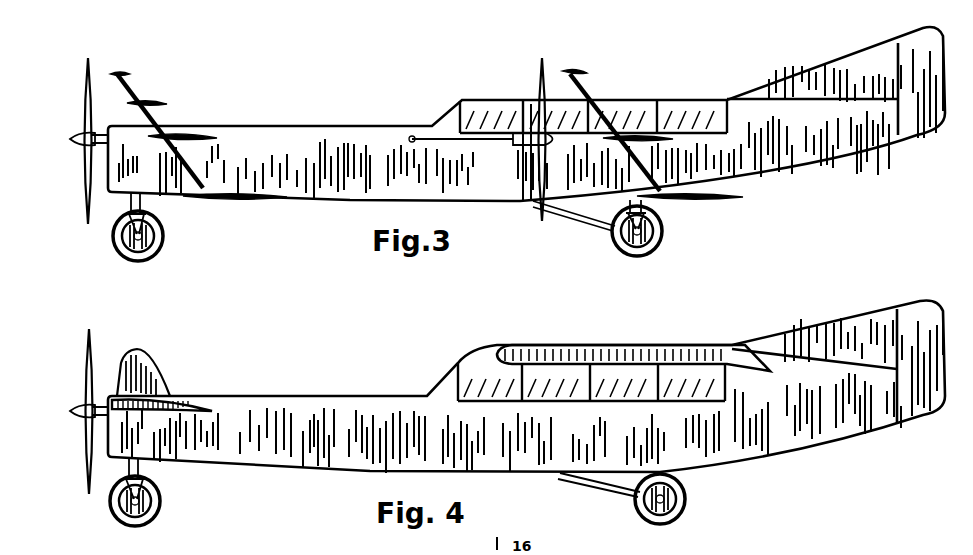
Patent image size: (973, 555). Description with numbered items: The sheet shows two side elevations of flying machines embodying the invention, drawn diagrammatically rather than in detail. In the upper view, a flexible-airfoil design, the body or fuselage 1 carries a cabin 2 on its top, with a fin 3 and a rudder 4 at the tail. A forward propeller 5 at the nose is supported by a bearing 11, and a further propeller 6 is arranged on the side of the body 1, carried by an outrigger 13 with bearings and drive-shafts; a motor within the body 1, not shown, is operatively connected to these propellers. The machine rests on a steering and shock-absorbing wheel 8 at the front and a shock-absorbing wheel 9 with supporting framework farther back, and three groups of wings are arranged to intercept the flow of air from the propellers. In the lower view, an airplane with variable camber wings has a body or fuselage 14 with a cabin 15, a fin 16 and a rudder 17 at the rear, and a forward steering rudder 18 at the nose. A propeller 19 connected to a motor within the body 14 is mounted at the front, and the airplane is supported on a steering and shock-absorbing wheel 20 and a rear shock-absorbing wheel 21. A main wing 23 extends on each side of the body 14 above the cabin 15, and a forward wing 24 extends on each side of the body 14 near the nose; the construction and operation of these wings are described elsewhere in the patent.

In FIG. 3, the body or fuselage 1 is at (342, 125).
In FIG. 3, the cabin 2 is at (478, 98).
In FIG. 3, the fin 3 is at (835, 67).
In FIG. 3, the rudder 4 is at (920, 122).
In FIG. 3, the forward propeller 5 is at (84, 103).
In FIG. 3, the propeller 6 is at (542, 203).
In FIG. 3, the steering and shock-absorbing wheel 8 is at (165, 236).
In FIG. 3, the shock-absorbing wheel 9 is at (664, 231).
In FIG. 3, the bearing 11 is at (100, 131).
In FIG. 3, the outrigger 13 is at (517, 143).
In FIG. 4, the body or fuselage 14 is at (352, 398).
In FIG. 4, the cabin 15 is at (480, 352).
In FIG. 4, the fin 16 is at (842, 326).
In FIG. 4, the rudder 17 is at (912, 408).
In FIG. 4, the forward steering rudder 18 is at (155, 382).
In FIG. 4, the propeller 19 is at (86, 379).
In FIG. 4, the steering and shock-absorbing wheel 20 is at (165, 501).
In FIG. 4, the rear shock-absorbing wheel 21 is at (680, 499).
In FIG. 4, the main wing 23 is at (612, 350).
In FIG. 4, the forward wing 24 is at (178, 401).